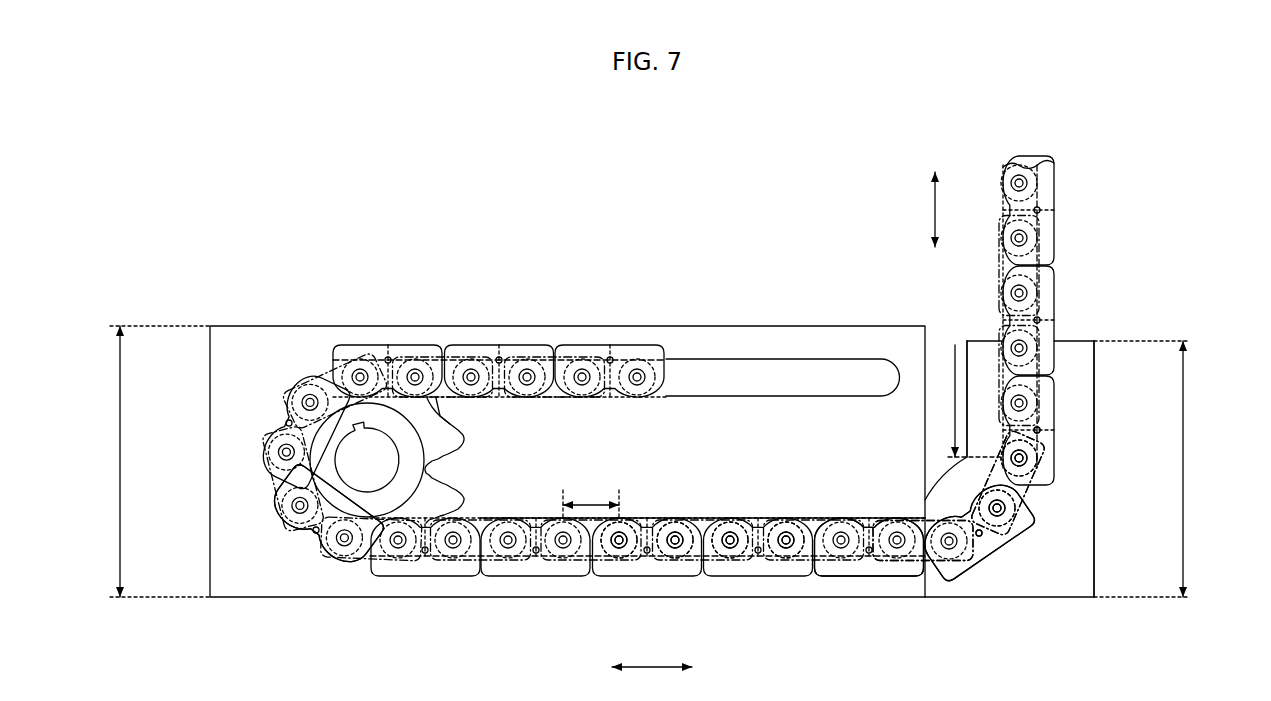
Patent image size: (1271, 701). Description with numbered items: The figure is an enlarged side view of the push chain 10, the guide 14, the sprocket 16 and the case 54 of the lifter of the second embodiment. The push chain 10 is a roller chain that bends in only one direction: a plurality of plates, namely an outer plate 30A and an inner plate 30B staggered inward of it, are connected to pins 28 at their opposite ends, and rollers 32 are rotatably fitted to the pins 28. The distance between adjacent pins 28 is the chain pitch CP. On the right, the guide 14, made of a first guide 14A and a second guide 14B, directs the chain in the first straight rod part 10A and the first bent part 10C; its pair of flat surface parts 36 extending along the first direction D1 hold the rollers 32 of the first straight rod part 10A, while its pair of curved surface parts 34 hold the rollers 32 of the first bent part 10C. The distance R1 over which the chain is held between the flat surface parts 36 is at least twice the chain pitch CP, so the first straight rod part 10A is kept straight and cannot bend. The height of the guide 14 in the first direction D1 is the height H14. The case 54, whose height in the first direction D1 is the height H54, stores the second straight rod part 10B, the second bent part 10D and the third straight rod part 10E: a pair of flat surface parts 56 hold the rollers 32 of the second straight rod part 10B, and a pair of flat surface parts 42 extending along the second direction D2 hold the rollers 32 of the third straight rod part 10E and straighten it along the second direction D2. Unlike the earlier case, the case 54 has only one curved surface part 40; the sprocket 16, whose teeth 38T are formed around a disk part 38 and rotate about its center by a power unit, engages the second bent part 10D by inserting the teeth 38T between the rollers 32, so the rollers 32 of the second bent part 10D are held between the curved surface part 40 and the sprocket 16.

The push chain 10 is at (652, 400).
The first straight rod part 10A is at (1057, 236).
The second straight rod part 10B is at (510, 578).
The first bent part 10C is at (1042, 517).
The second bent part 10D is at (240, 446).
The third straight rod part 10E is at (530, 345).
The guide 14 is at (1075, 600).
The first guide 14A is at (1080, 348).
The second guide 14B is at (977, 345).
The sprocket 16 is at (448, 462).
The pins 28 is at (787, 546).
The outer plate 30A is at (988, 557).
The inner plate 30B is at (967, 578).
The rollers 32 is at (676, 546).
The curved surface parts 34 is at (985, 558).
The flat surface parts 36 is at (1055, 425).
The disk part 38 is at (389, 372).
The teeth 38T is at (447, 388).
The curved surface part 40 is at (300, 548).
The flat surface parts 42 is at (695, 398).
The case 54 is at (208, 287).
The flat surface parts 56 is at (715, 542).
The height H54 is at (141, 461).
The height H14 is at (1164, 469).
The first direction D1 is at (918, 209).
The second direction D2 is at (652, 684).
The chain pitch CP is at (591, 498).
The distance R1 is at (963, 401).